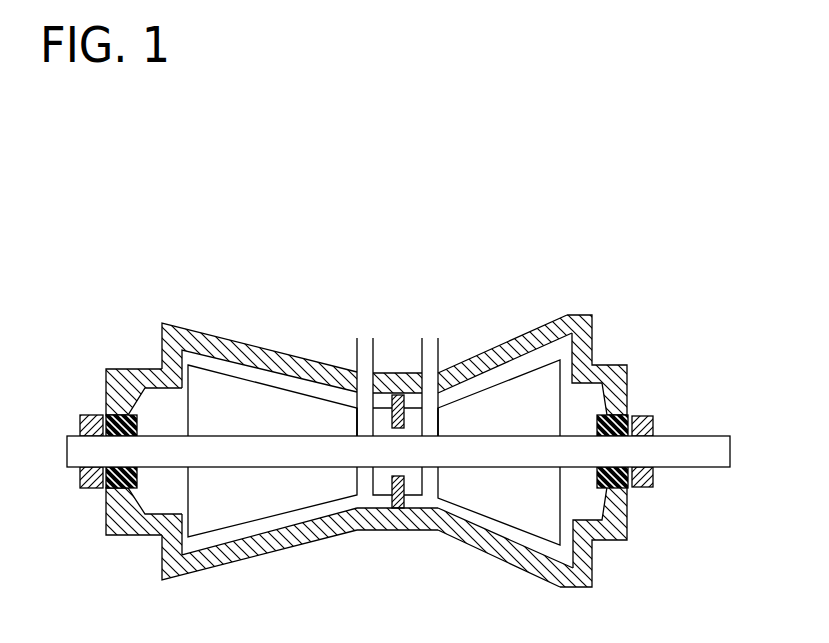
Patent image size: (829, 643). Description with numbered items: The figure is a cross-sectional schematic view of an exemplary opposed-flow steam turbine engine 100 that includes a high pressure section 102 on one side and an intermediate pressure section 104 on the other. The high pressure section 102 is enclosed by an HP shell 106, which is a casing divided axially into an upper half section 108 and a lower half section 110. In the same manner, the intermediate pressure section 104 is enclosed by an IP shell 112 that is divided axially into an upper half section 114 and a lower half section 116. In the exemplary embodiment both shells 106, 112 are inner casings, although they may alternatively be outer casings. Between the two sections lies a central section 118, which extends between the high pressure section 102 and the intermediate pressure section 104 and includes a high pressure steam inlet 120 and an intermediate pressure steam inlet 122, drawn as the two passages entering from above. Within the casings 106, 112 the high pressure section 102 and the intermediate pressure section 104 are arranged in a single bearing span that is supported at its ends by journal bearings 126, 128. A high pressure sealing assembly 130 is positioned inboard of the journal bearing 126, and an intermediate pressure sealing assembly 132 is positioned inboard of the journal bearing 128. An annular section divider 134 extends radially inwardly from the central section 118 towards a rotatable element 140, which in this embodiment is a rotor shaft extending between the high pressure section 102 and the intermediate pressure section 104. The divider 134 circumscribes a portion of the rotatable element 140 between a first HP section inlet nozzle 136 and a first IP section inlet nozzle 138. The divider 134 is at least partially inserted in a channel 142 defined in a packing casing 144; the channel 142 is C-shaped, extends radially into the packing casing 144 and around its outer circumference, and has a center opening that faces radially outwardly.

The opposed-flow steam turbine engine 100 is at (152, 263).
The high pressure section 102 is at (247, 325).
The intermediate pressure section 104 is at (518, 315).
The HP shell 106 is at (133, 355).
The upper half section 108 is at (173, 328).
The lower half section 110 is at (193, 572).
The IP shell 112 is at (587, 277).
The upper half section 114 is at (575, 315).
The lower half section 116 is at (513, 565).
The central section 118 is at (397, 335).
The high pressure steam inlet 120 is at (355, 353).
The intermediate pressure steam inlet 122 is at (438, 345).
The journal bearing 126 is at (90, 415).
The journal bearing 128 is at (642, 415).
The high pressure sealing assembly 130 is at (137, 480).
The intermediate pressure sealing assembly 132 is at (628, 522).
The annular section divider 134 is at (405, 497).
The first HP section inlet nozzle 136 is at (356, 422).
The first IP section inlet nozzle 138 is at (446, 422).
The rotatable element 140 is at (701, 431).
The channel 142 is at (410, 462).
The packing casing 144 is at (425, 480).